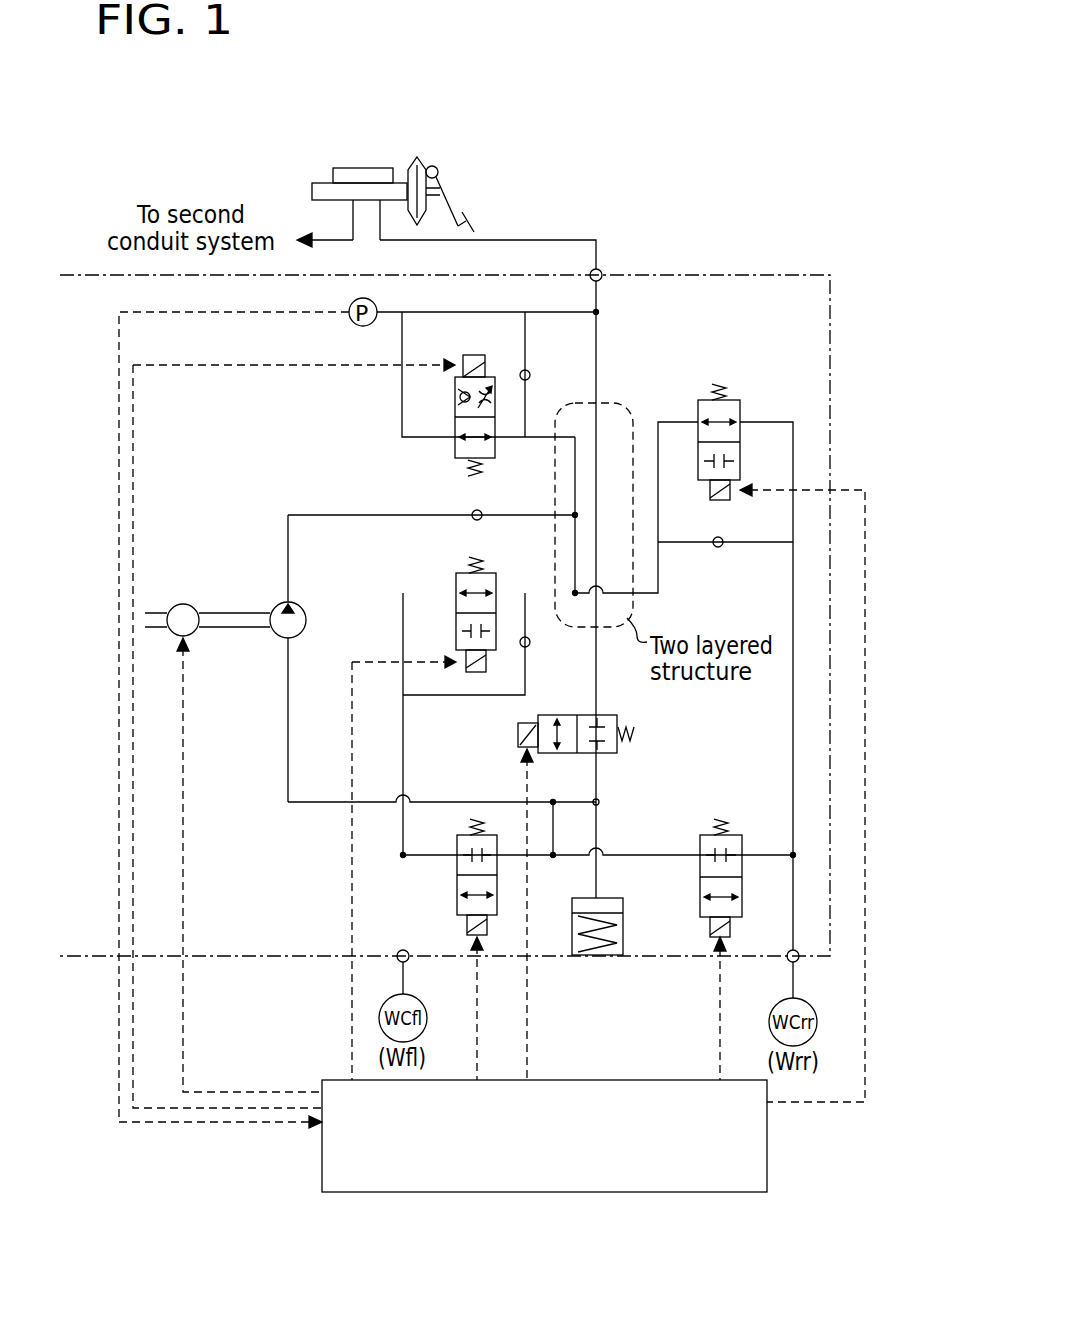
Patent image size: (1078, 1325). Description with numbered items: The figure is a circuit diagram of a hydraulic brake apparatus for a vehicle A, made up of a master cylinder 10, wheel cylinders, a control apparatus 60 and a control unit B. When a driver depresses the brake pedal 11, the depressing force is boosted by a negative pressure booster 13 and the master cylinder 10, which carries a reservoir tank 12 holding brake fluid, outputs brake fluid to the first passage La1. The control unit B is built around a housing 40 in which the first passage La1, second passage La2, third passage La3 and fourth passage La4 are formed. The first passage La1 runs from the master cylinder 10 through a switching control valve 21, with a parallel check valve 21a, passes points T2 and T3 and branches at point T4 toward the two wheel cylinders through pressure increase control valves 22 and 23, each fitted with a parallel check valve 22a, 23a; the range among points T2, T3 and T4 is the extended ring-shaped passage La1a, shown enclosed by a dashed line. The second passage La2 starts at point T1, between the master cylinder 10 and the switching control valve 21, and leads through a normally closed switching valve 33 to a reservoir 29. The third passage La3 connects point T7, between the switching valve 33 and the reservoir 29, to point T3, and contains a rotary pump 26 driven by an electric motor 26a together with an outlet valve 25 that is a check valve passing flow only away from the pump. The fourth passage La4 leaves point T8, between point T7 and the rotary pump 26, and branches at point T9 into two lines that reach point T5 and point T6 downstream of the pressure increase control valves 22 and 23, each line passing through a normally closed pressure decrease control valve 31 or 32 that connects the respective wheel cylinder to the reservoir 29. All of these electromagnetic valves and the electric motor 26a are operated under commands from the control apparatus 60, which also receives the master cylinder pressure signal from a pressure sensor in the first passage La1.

The master cylinder 10 is at (310, 188).
The brake pedal 11 is at (445, 194).
The reservoir tank 12 is at (336, 168).
The negative pressure booster 13 is at (414, 161).
The switching control valve 21 is at (455, 397).
The check valve 21a is at (531, 375).
The pressure increase control valve 22 is at (456, 632).
The check valve 22a is at (531, 644).
The pressure increase control valve 23 is at (742, 470).
The check valve 23a is at (720, 548).
The outlet valve 25 is at (476, 522).
The rotary pump 26 is at (306, 620).
The electric motor 26a is at (184, 604).
The reservoir 29 is at (573, 936).
The pressure decrease control valve 31 is at (457, 890).
The pressure decrease control valve 32 is at (744, 900).
The switching valve 33 is at (604, 715).
The housing 40 is at (830, 410).
The control apparatus 60 is at (585, 1080).
The vehicle A is at (540, 120).
The control unit B is at (714, 266).
The point T1 is at (599, 314).
The point T2 is at (577, 421).
The point T3 is at (574, 518).
The point T4 is at (577, 612).
The point T5 is at (402, 855).
The point T6 is at (792, 854).
The point T7 is at (600, 803).
The point T8 is at (557, 812).
The point T9 is at (557, 875).
The first passage La1 is at (402, 424).
The extended ring-shaped passage La1a is at (574, 494).
The second passage La2 is at (598, 833).
The third passage La3 is at (288, 588).
The fourth passage La4 is at (636, 860).